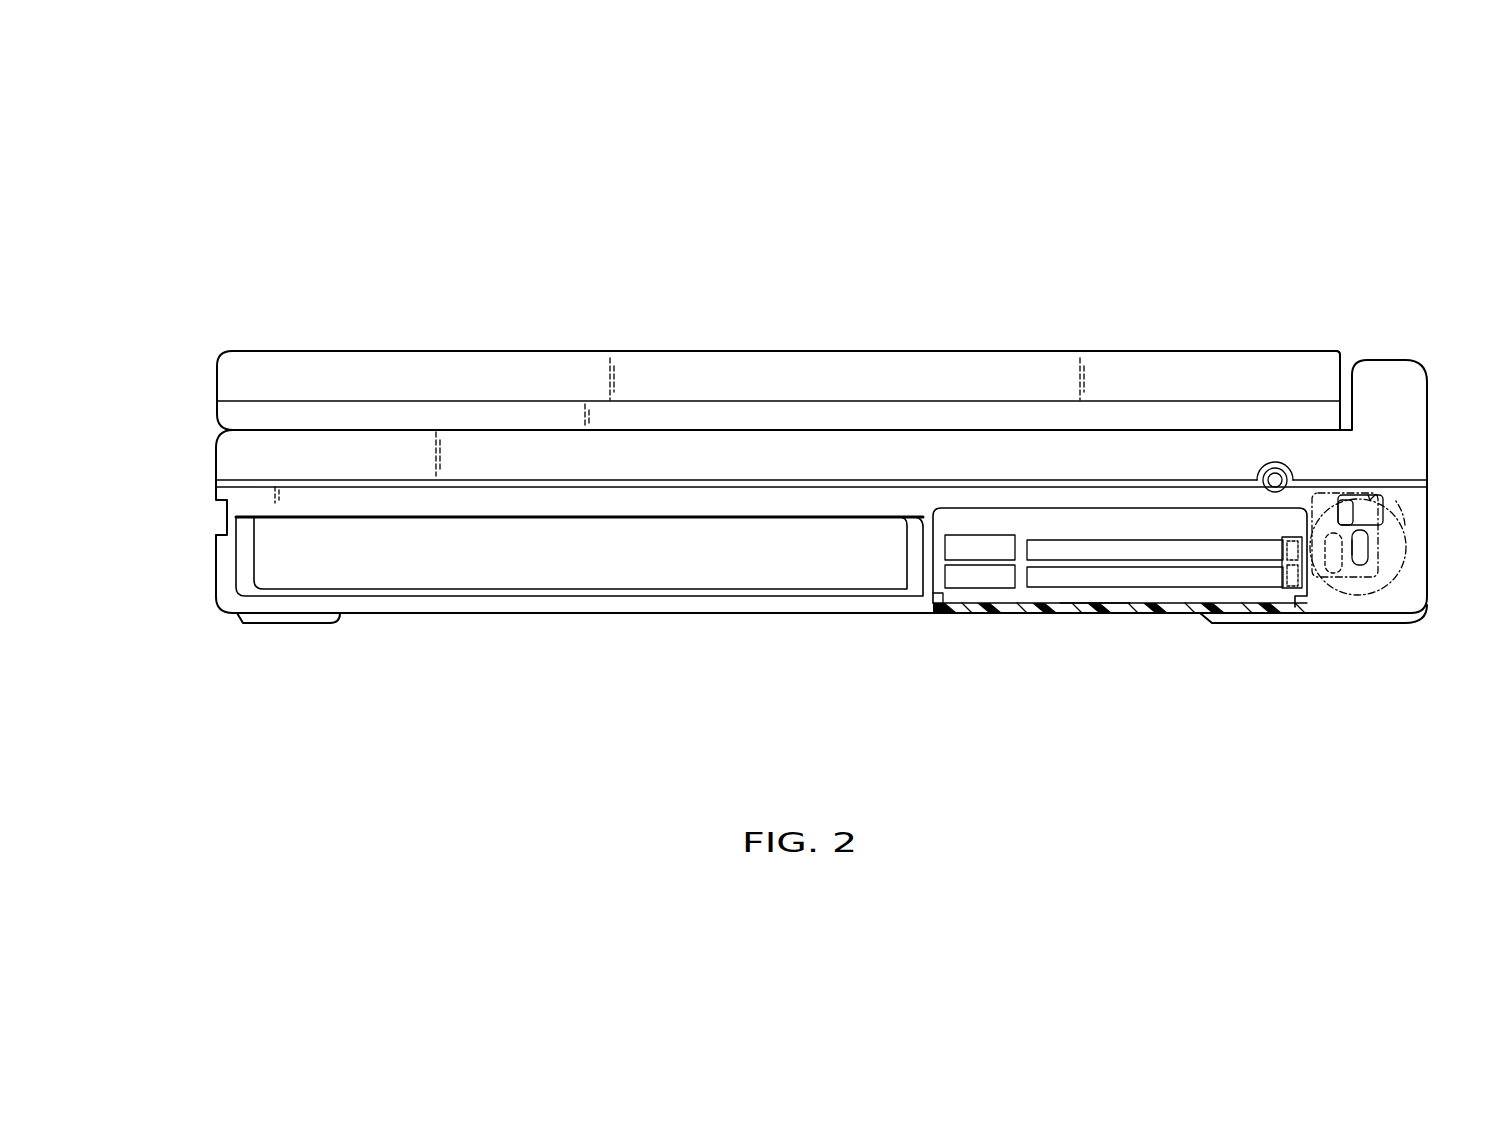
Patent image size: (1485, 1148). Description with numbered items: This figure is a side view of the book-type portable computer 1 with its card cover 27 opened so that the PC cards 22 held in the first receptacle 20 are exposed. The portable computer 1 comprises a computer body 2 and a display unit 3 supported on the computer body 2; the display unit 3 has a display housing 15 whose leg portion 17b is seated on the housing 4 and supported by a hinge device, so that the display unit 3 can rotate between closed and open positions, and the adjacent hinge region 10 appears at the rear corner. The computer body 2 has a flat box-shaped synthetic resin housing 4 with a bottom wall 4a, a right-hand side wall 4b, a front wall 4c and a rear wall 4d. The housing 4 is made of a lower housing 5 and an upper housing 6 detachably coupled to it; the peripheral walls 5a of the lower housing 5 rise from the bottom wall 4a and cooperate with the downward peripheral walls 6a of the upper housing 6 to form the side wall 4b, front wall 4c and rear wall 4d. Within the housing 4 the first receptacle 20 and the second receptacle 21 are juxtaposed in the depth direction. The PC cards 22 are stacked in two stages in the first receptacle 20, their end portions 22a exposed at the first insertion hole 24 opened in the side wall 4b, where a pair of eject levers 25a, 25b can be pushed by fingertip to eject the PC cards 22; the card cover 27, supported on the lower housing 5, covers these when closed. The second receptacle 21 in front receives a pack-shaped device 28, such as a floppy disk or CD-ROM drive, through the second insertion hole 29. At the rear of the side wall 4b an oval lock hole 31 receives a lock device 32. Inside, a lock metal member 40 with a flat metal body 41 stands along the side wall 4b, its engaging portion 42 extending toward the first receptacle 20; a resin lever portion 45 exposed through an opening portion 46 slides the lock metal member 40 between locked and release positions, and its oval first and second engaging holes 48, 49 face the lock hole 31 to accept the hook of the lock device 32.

The portable computer 1 is at (1170, 302).
The computer body 2 is at (225, 500).
The display unit 3 is at (525, 368).
The housing 4 is at (327, 657).
The bottom wall 4a is at (668, 612).
The side wall 4b is at (890, 498).
The front wall 4c is at (215, 572).
The rear wall 4d is at (1427, 572).
The lower housing 5 is at (428, 605).
The peripheral walls 5a is at (1003, 497).
The upper housing 6 is at (370, 470).
The peripheral walls 6a is at (857, 440).
The hinge portion 10 is at (1377, 385).
The display housing 15 is at (727, 368).
The leg portion 17b is at (1345, 390).
The first receptacle 20 is at (1093, 603).
The second receptacle 21 is at (770, 595).
The PC cards 22 is at (1160, 548).
The end portions 22a is at (1165, 587).
The first insertion hole 24 is at (1063, 530).
The eject lever 25a is at (953, 547).
The eject lever 25b is at (985, 577).
The card cover 27 is at (1038, 605).
The pack-shaped device 28 is at (660, 535).
The second insertion hole 29 is at (527, 590).
The lock hole 31 is at (1357, 567).
The lock device 32 is at (1403, 509).
The lock metal member 40 is at (1390, 545).
The metal body 41 is at (1327, 575).
The engaging portion 42 is at (1285, 563).
The lever portion 45 is at (1345, 505).
The opening portion 46 is at (1370, 500).
The first engaging hole 48 is at (1370, 547).
The second engaging hole 49 is at (1335, 572).